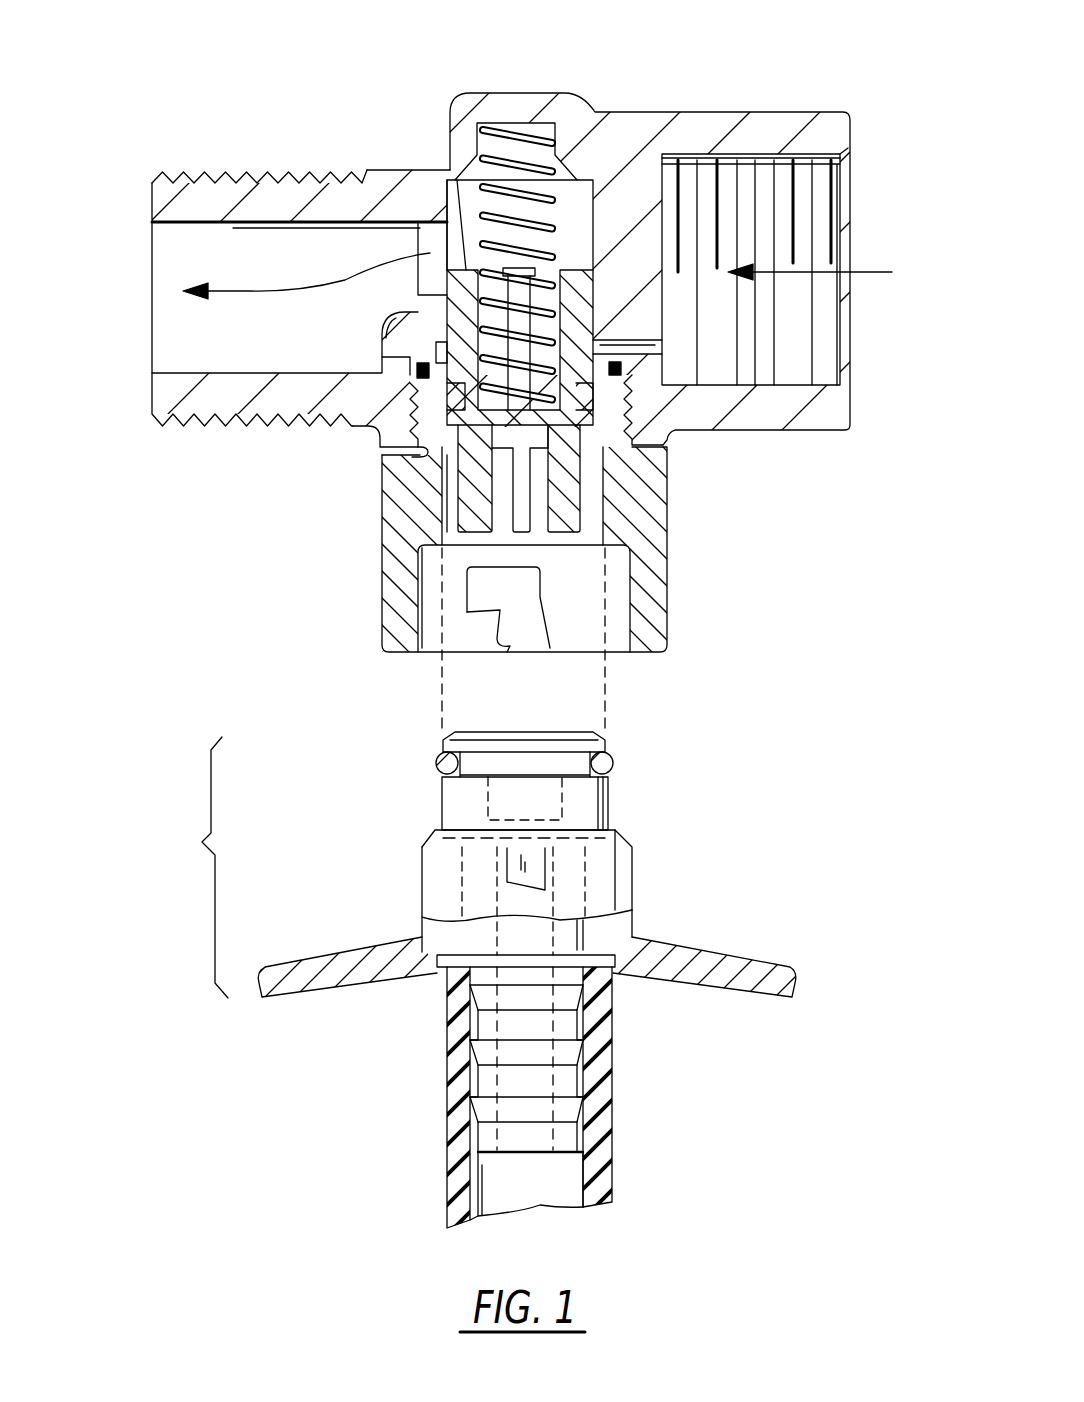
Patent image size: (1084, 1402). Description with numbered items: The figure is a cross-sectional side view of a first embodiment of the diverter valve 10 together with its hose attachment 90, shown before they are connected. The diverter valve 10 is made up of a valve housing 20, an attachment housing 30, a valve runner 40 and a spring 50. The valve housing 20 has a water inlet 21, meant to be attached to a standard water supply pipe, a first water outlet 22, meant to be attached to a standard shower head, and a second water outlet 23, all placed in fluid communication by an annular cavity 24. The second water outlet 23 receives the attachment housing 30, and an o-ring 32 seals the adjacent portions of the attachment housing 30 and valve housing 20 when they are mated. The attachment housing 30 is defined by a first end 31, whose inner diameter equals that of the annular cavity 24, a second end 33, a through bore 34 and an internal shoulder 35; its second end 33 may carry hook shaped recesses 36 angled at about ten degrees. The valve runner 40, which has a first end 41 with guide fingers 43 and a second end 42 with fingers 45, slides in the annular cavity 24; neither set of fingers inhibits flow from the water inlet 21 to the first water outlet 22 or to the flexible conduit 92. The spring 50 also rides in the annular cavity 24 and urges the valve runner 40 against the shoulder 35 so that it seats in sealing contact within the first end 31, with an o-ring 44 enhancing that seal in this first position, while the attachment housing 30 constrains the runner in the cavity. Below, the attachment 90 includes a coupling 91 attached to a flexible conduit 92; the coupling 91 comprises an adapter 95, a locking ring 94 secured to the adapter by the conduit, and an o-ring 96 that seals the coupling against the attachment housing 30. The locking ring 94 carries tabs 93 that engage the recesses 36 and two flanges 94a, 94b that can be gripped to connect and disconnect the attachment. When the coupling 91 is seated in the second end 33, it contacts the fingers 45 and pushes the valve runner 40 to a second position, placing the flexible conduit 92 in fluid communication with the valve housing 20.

The diverter valve 10 is at (858, 14).
The valve housing 20 is at (690, 110).
The water inlet 21 is at (828, 385).
The first water outlet 22 is at (175, 373).
The second water outlet 23 is at (385, 458).
The annular cavity 24 is at (590, 178).
The attachment housing 30 is at (667, 595).
The first end 31 is at (608, 343).
The o-ring 32 is at (622, 372).
The second end 33 is at (658, 650).
The through bore 34 is at (545, 543).
The internal shoulder 35 is at (450, 476).
The hook shaped recess 36 is at (507, 654).
The valve runner 40 is at (447, 262).
The first end 41 is at (447, 178).
The second end 42 is at (455, 555).
The guide fingers 43 is at (530, 272).
The o-ring 44 is at (450, 400).
The fingers 45 is at (577, 507).
The spring 50 is at (512, 132).
The attachment 90 is at (643, 1148).
The coupling 91 is at (192, 867).
The flexible conduit 92 is at (443, 1188).
The tab 93 is at (530, 867).
The locking ring 94 is at (632, 902).
The flange 94a is at (290, 988).
The flange 94b is at (763, 997).
The adapter 95 is at (612, 812).
The o-ring 96 is at (620, 768).